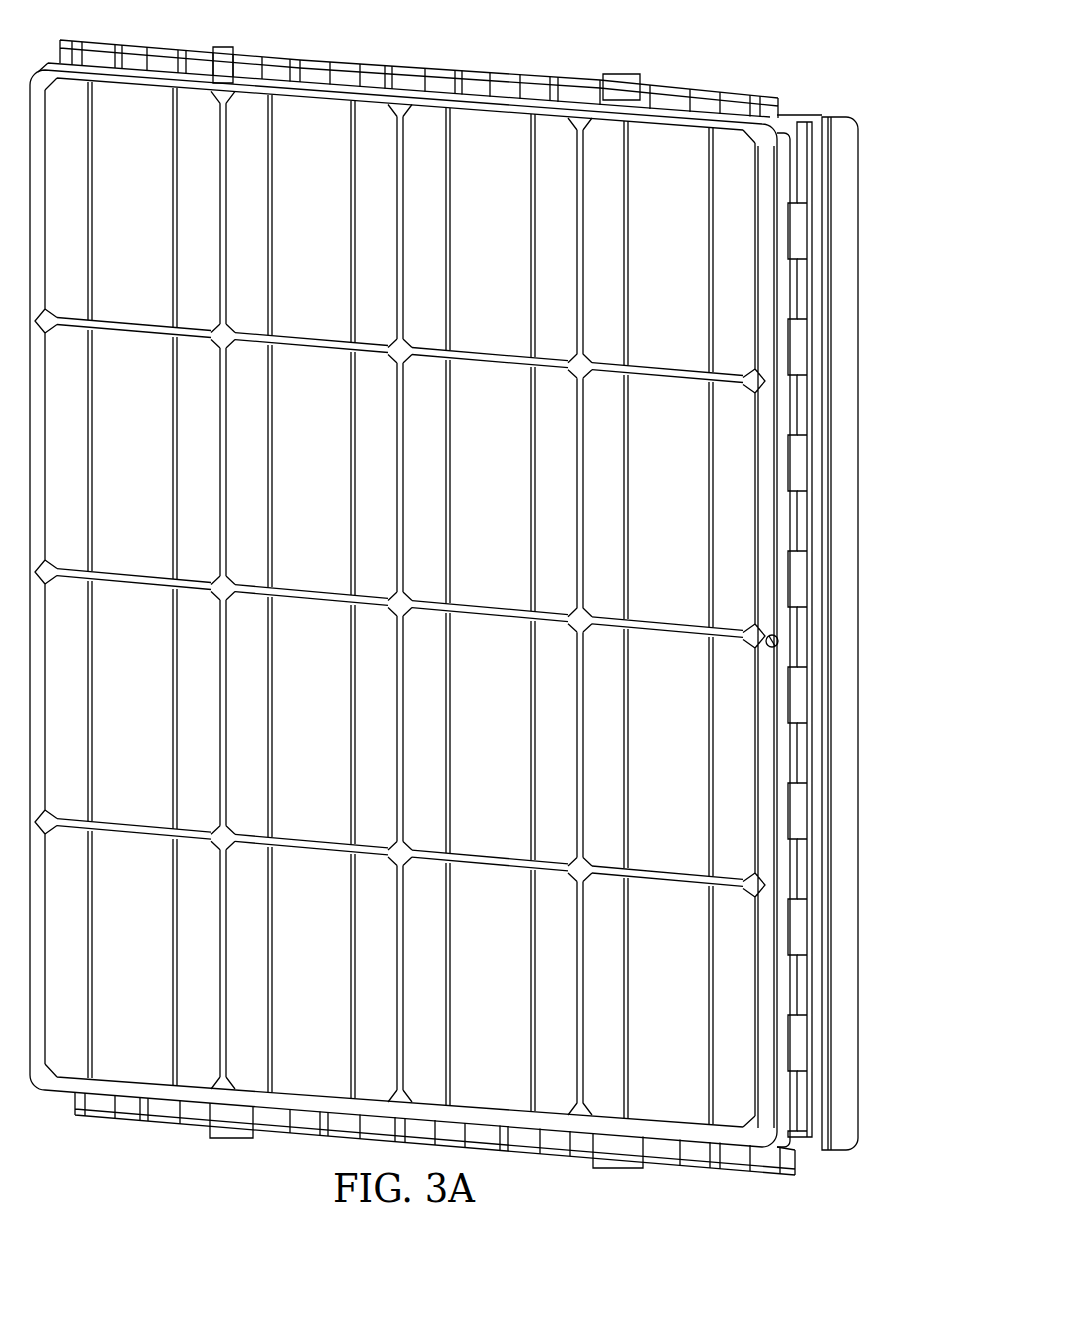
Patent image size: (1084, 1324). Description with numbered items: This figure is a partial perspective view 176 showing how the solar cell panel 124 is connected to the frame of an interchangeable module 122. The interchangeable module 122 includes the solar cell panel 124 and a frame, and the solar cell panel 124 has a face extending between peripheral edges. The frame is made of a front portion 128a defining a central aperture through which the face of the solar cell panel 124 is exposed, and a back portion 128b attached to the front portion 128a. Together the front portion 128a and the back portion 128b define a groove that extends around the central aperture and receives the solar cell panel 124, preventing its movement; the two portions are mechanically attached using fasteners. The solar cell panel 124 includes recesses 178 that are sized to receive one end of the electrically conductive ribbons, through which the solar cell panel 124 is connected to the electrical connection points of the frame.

The interchangeable module 122 is at (778, 757).
The solar cell panel 124 is at (740, 407).
The front portion 128a is at (813, 343).
The back portion 128b is at (842, 511).
The partial perspective view 176 is at (779, 67).
The recess 178 is at (779, 641).